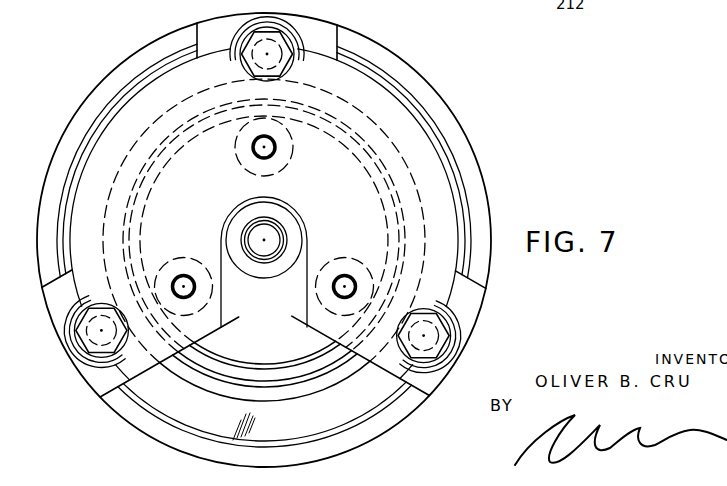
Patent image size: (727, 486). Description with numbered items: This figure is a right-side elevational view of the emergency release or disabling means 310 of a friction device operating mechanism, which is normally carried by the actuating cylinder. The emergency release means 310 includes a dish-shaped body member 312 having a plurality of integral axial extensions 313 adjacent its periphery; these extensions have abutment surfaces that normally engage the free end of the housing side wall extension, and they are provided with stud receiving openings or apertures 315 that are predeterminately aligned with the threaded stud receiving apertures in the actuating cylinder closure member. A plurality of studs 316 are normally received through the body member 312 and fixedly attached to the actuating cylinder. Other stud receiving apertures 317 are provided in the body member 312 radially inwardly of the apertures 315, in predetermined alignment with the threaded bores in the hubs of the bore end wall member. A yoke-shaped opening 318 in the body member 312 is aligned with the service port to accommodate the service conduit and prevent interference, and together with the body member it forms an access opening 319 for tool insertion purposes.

The emergency release or disabling means 310 is at (122, 62).
The dish-shaped body member 312 is at (343, 193).
The integral axial extensions 313 is at (323, 33).
The stud receiving openings or apertures 315 is at (243, 64).
The studs 316 is at (286, 66).
The stud receiving apertures 317 is at (252, 152).
The yoke-shaped opening 318 is at (273, 339).
The access opening 319 is at (282, 388).